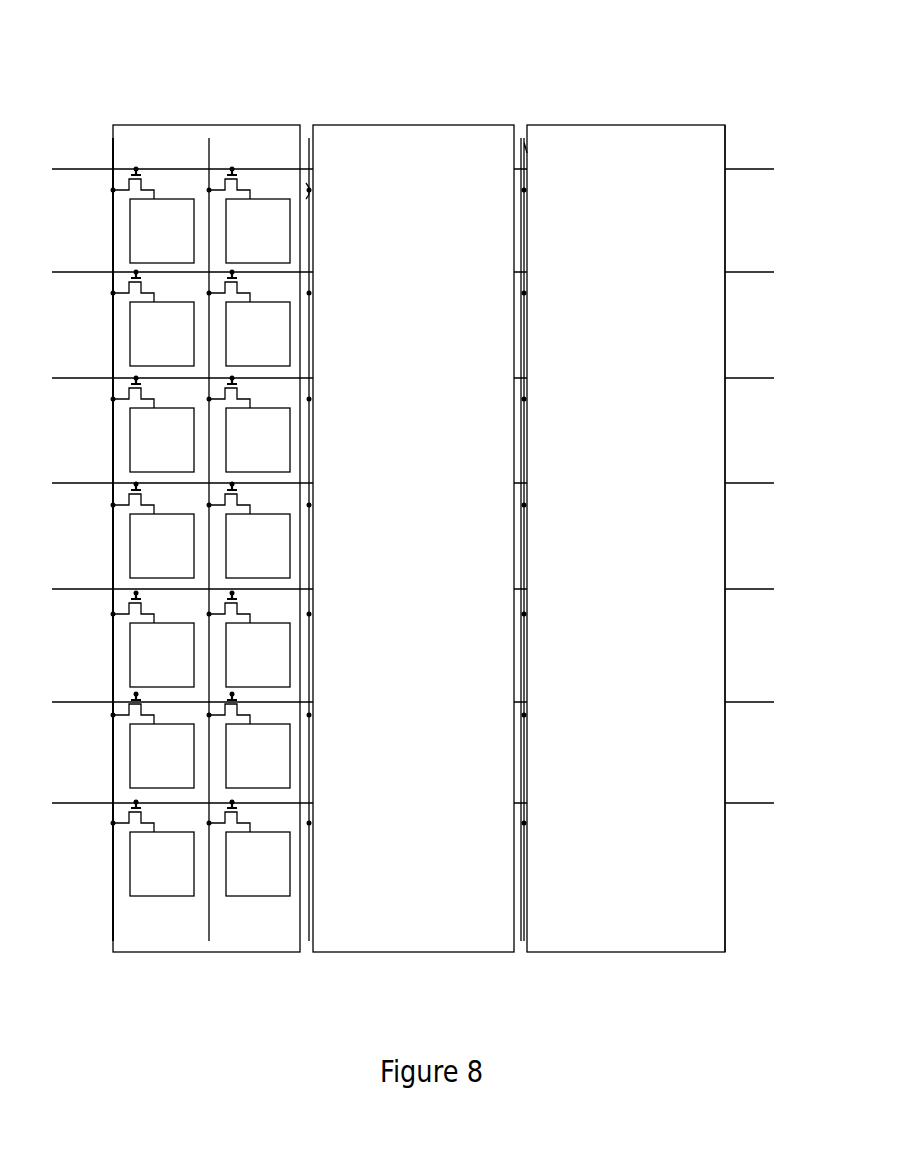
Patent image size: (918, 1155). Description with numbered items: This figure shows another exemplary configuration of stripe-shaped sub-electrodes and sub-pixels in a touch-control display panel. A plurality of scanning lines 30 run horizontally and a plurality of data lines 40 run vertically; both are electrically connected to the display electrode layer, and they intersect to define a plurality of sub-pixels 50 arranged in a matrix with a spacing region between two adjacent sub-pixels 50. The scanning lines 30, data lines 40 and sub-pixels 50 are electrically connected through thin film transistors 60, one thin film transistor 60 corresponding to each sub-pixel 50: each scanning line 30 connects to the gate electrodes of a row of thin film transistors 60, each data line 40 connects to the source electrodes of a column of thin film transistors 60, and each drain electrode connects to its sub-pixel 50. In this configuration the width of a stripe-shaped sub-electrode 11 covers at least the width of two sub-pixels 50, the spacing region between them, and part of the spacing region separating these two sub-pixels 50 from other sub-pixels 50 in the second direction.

The stripe-shaped sub-electrode 11 is at (224, 125).
The scanning line 30 is at (735, 168).
The data line 40 is at (536, 125).
The sub-pixel 50 is at (725, 217).
The thin film transistor 60 is at (373, 125).